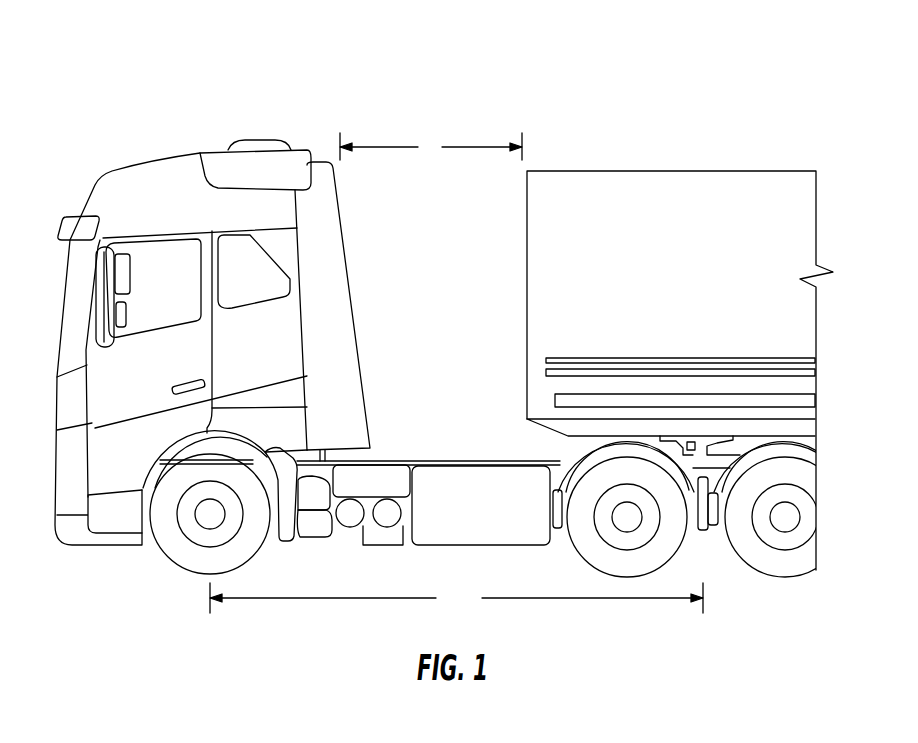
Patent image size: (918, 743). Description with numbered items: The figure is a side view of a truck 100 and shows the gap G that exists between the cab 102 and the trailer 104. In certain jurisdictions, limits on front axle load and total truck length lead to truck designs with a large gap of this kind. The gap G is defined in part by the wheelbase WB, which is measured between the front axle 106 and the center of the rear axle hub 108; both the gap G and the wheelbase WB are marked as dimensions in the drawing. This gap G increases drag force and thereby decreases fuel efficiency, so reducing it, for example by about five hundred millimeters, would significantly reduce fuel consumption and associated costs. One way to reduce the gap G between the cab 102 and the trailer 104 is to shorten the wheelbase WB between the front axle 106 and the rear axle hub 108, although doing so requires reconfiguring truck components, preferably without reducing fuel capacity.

The truck 100 is at (114, 66).
The cab 102 is at (190, 158).
The trailer 104 is at (653, 171).
The front axle 106 is at (208, 522).
The rear axle hub 108 is at (706, 522).